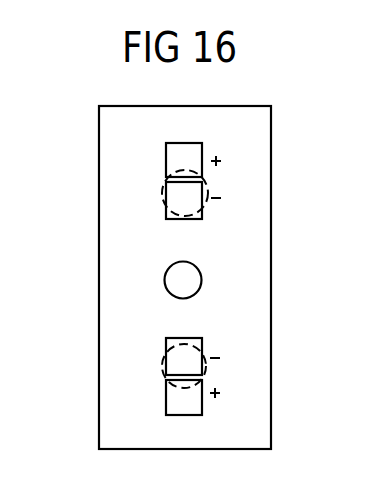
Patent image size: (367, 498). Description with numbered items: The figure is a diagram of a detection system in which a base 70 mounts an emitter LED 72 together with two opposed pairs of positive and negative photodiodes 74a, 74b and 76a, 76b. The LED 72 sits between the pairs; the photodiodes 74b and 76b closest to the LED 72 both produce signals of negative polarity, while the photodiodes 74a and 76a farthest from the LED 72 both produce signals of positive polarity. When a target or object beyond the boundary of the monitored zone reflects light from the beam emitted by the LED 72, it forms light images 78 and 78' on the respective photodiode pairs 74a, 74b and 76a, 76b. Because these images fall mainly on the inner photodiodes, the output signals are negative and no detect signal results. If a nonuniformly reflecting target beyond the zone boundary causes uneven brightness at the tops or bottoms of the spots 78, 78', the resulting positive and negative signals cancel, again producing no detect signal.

The base 70 is at (262, 118).
The emitter LED 72 is at (201, 272).
The positive photodiode 74a is at (202, 145).
The negative photodiode 74b is at (202, 211).
The positive photodiode 76a is at (202, 413).
The negative photodiode 76b is at (202, 344).
The light image 78 is at (128, 194).
The light image 78' is at (124, 371).